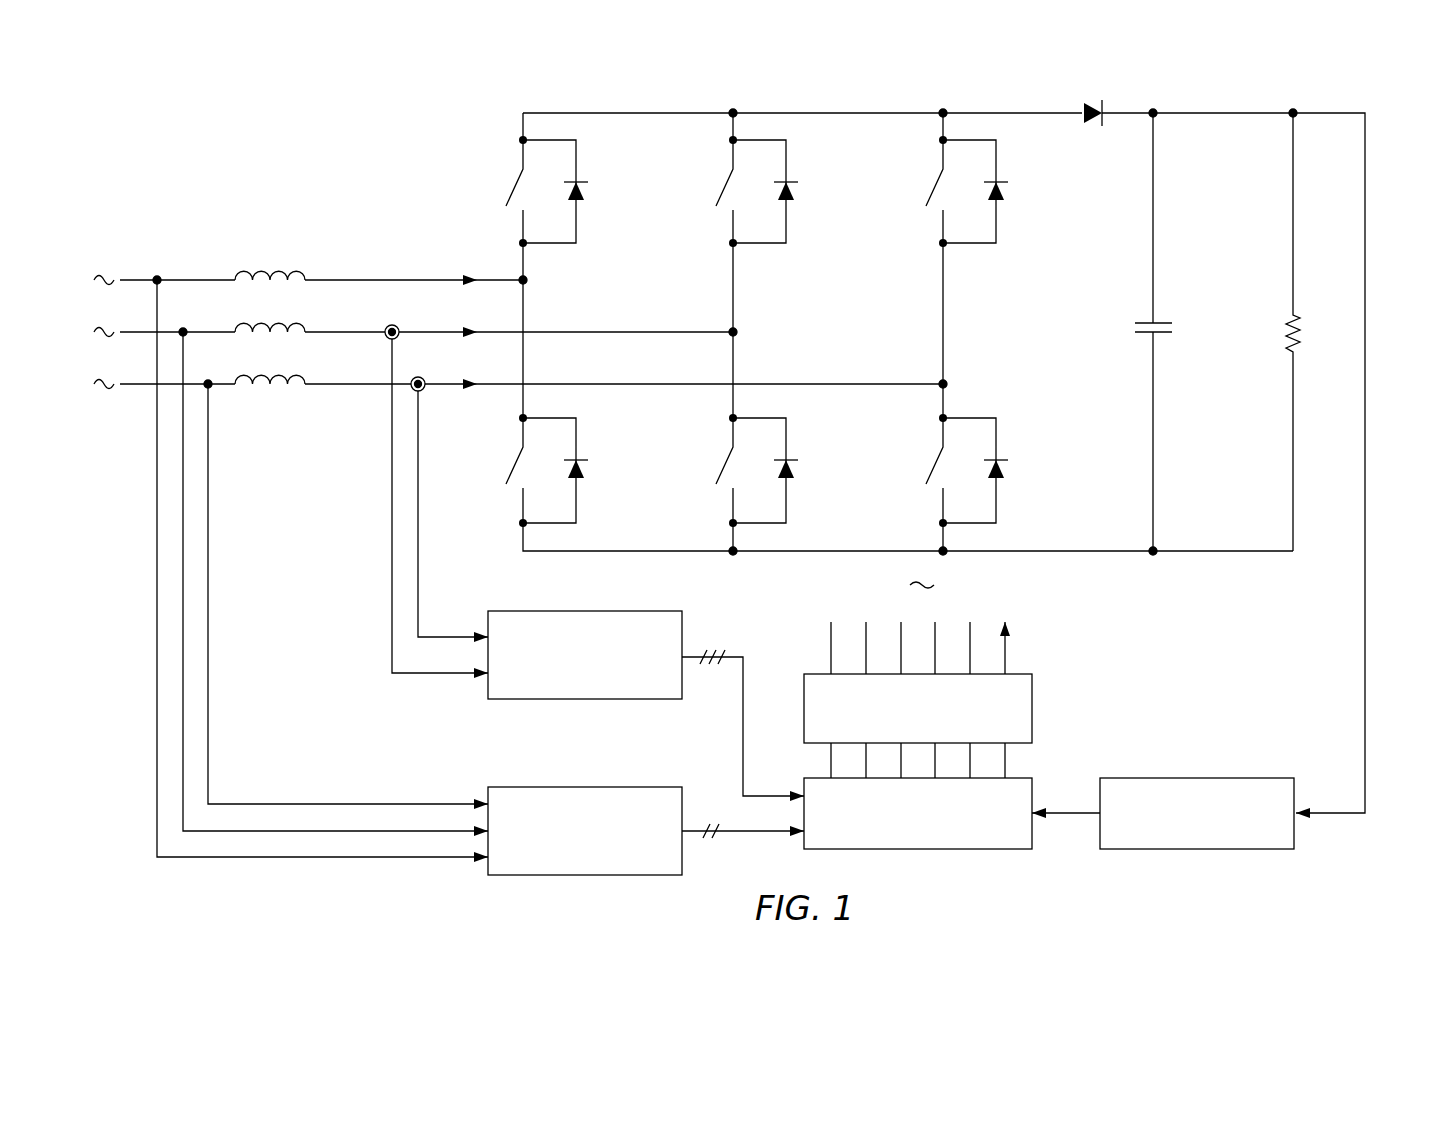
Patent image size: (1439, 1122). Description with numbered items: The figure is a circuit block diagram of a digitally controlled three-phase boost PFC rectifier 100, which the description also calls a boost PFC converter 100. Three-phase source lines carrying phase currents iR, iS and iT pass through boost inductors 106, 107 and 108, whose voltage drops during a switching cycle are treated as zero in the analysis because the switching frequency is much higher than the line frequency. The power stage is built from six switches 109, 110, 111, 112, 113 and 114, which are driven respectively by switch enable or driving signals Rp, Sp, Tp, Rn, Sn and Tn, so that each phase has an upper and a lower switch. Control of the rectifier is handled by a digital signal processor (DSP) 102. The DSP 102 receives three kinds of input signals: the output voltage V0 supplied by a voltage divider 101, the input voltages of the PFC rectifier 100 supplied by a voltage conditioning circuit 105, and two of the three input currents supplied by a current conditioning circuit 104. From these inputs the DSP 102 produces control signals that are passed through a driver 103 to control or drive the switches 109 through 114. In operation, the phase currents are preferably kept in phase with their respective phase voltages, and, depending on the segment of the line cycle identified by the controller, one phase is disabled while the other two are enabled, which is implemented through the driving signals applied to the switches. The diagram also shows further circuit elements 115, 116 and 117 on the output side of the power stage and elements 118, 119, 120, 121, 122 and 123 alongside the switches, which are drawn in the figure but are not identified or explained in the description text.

The digitally controlled three-phase boost PFC rectifier 100 is at (1345, 873).
The voltage divider 101 is at (1254, 849).
The digital signal processor (DSP) 102 is at (1002, 849).
The driver 103 is at (1032, 708).
The current conditioning circuit 104 is at (647, 699).
The voltage conditioning circuit 105 is at (647, 875).
The boost inductor 106 is at (269, 270).
The boost inductor 107 is at (242, 331).
The boost inductor 108 is at (271, 391).
The switch 109 is at (520, 171).
The switch 110 is at (730, 171).
The switch 111 is at (940, 171).
The switch 112 is at (520, 449).
The switch 113 is at (730, 449).
The switch 114 is at (940, 449).
The DC diode D_dc 115 is at (1090, 102).
The bus capacitor C_B 116 is at (1149, 321).
The load resistor R_L 117 is at (1290, 317).
The anti-parallel diode of R_p 118 is at (588, 190).
The anti-parallel diode of S_p 119 is at (798, 190).
The anti-parallel diode of T_p 120 is at (1008, 190).
The anti-parallel diode of R_n 121 is at (588, 468).
The anti-parallel diode of S_n 122 is at (798, 468).
The anti-parallel diode of T_n 123 is at (1008, 468).